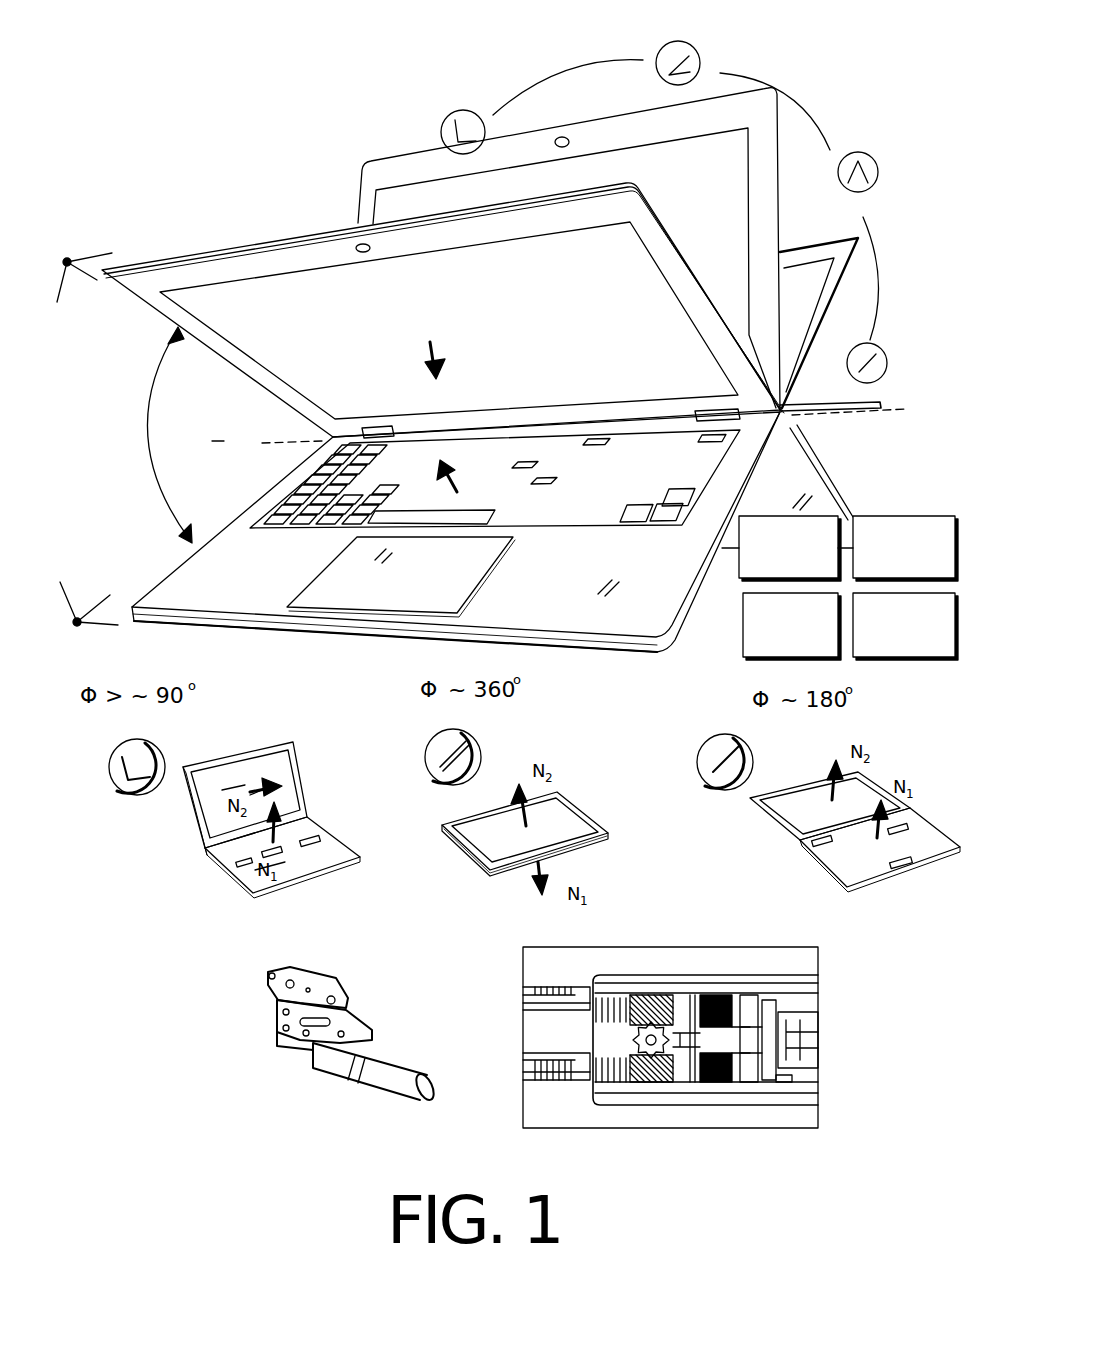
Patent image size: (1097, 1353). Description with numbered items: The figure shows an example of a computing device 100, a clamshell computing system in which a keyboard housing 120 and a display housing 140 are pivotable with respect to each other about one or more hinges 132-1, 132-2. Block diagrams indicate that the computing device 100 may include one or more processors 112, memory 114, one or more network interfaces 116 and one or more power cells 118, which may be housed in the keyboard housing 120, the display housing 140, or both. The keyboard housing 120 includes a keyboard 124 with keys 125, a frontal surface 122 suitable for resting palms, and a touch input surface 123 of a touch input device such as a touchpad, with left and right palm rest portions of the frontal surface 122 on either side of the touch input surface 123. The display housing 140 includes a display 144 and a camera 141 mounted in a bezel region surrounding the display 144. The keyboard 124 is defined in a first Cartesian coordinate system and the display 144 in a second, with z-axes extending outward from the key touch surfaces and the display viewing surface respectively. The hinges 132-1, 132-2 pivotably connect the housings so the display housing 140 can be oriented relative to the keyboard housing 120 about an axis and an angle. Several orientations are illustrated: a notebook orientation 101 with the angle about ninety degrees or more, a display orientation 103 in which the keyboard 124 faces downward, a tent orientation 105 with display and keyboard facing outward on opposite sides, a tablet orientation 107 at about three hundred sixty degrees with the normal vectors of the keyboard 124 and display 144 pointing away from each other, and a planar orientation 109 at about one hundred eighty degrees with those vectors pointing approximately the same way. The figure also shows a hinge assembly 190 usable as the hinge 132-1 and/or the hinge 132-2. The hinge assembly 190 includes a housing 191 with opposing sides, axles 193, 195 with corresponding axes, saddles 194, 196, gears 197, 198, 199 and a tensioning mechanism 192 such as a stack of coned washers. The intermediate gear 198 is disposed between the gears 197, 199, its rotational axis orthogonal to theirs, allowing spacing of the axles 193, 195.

The computing device 100 is at (272, 132).
The orientation 101 is at (440, 125).
The orientation 103 is at (656, 50).
The orientation 105 is at (878, 160).
The orientation 107 is at (888, 352).
The orientation 109 is at (697, 745).
The processors 112 is at (772, 571).
The memory 114 is at (887, 571).
The network interfaces 116 is at (773, 650).
The power cells 118 is at (887, 650).
The keyboard housing 120 is at (203, 626).
The frontal surface 122 is at (566, 582).
The touch input surface 123 is at (439, 588).
The keyboard 124 is at (646, 490).
The keys 125 is at (635, 525).
The hinge 132-1 is at (385, 426).
The hinge 132-2 is at (705, 410).
The display housing 140 is at (194, 252).
The camera 141 is at (362, 255).
The display 144 is at (582, 319).
The hinge assembly 190 is at (440, 985).
The housing 191 is at (387, 1055).
The tensioning mechanism 192 is at (720, 993).
The axle 193 is at (582, 1002).
The saddle 194 is at (333, 986).
The axle 195 is at (280, 1048).
The saddle 196 is at (285, 1020).
The gear 197 is at (652, 995).
The intermediate gear 198 is at (630, 1083).
The gear 199 is at (655, 1085).